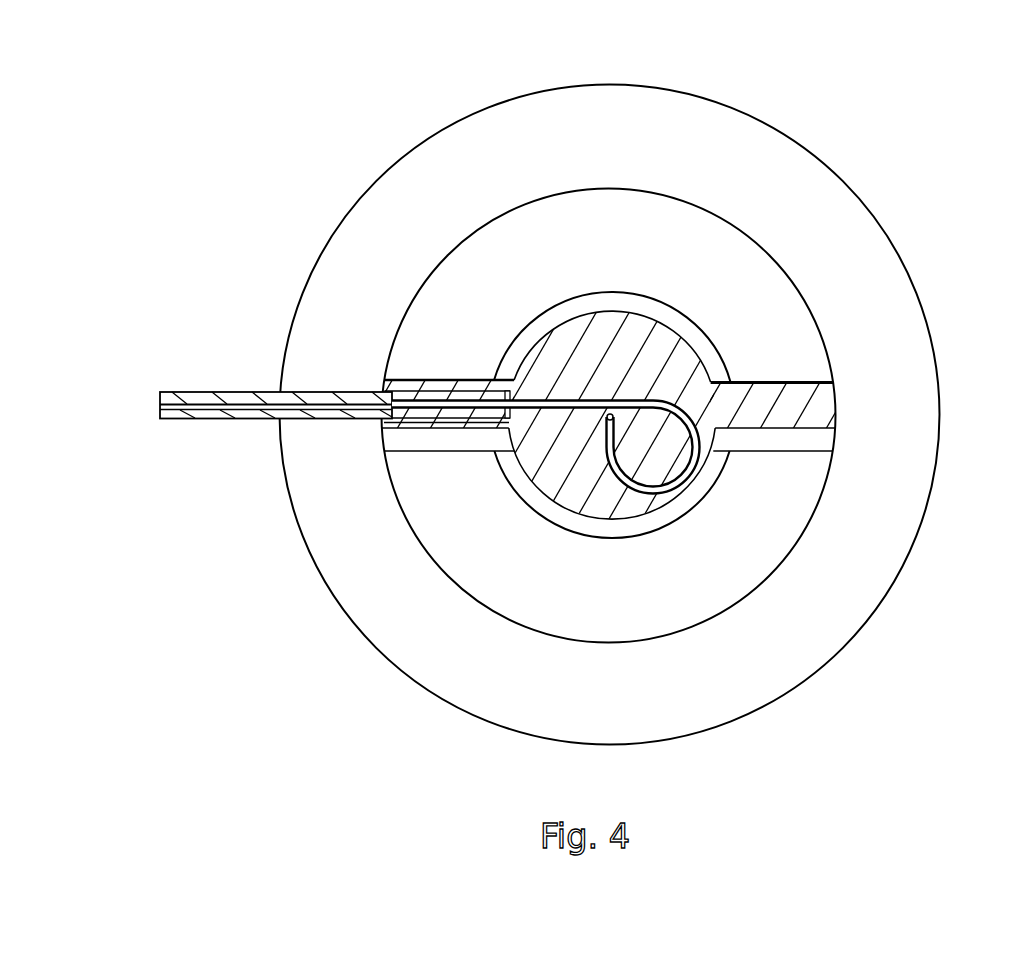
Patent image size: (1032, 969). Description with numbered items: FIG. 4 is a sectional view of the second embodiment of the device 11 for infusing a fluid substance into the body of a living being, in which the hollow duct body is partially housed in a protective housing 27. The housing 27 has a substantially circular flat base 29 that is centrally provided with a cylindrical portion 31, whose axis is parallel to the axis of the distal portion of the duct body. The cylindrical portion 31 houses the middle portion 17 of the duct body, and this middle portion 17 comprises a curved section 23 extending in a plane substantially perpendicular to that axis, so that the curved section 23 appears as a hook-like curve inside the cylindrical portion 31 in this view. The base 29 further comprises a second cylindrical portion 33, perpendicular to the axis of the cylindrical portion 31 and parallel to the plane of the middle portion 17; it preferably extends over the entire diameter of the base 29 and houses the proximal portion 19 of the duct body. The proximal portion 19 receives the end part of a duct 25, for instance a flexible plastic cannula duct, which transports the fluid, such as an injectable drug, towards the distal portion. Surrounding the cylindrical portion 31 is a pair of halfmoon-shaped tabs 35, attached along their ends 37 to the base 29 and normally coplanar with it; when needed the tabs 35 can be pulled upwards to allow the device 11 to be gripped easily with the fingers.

The device for infusing a fluid substance 11 is at (611, 400).
The middle portion 17 is at (648, 478).
The proximal portion 19 is at (538, 581).
The curved section 23 is at (702, 466).
The duct 25 is at (172, 419).
The protective housing 27 is at (514, 553).
The flat base 29 is at (366, 655).
The cylindrical portion 31 is at (563, 338).
The second cylindrical portion 33 is at (460, 380).
The halfmoon-shaped tabs 35 is at (624, 260).
The ends 37 is at (423, 380).